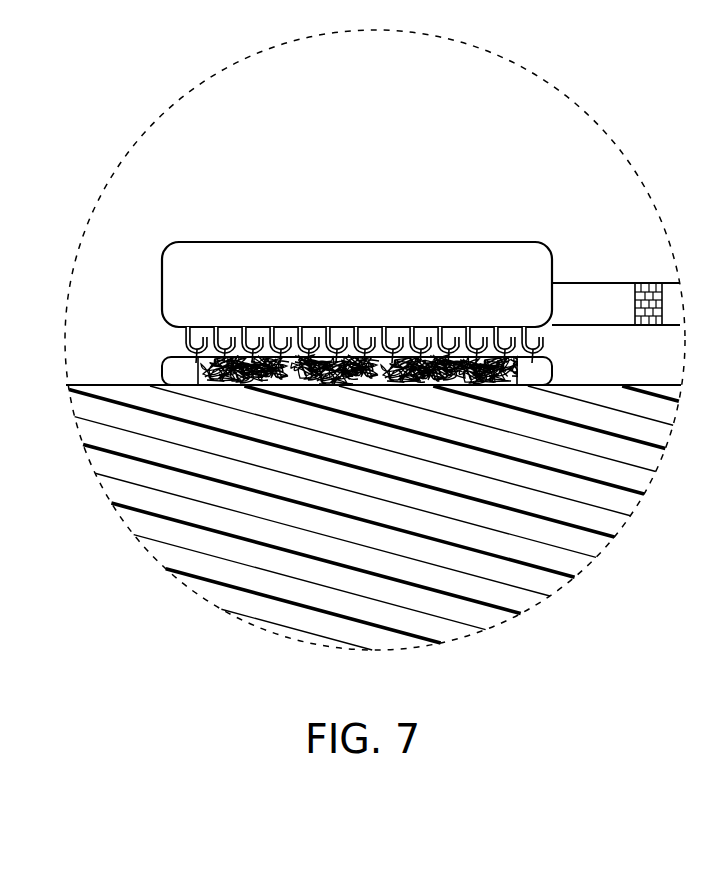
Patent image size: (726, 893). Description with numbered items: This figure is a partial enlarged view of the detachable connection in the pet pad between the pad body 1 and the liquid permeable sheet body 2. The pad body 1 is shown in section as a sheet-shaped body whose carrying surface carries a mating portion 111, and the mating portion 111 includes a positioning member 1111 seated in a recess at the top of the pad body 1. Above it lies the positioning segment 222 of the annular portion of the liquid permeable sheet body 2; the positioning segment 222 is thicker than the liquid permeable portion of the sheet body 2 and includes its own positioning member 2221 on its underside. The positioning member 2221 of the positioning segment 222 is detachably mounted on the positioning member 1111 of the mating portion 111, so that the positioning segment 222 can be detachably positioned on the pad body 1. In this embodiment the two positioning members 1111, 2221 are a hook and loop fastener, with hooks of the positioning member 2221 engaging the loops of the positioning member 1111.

The pad body 1 is at (590, 519).
The mating portion 111 is at (273, 386).
The positioning member 1111 is at (192, 375).
The liquid permeable sheet body 2 is at (378, 261).
The positioning segment 222 is at (237, 265).
The positioning member 2221 is at (195, 336).